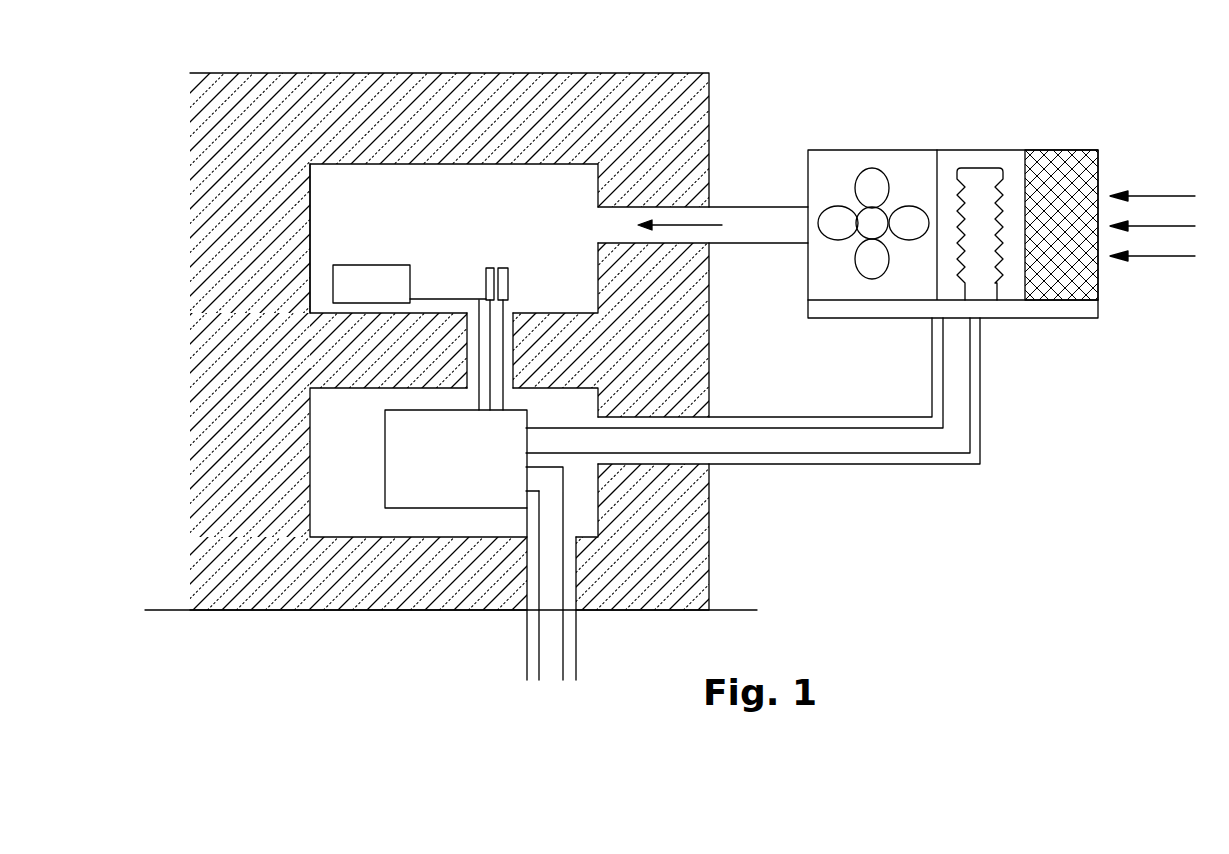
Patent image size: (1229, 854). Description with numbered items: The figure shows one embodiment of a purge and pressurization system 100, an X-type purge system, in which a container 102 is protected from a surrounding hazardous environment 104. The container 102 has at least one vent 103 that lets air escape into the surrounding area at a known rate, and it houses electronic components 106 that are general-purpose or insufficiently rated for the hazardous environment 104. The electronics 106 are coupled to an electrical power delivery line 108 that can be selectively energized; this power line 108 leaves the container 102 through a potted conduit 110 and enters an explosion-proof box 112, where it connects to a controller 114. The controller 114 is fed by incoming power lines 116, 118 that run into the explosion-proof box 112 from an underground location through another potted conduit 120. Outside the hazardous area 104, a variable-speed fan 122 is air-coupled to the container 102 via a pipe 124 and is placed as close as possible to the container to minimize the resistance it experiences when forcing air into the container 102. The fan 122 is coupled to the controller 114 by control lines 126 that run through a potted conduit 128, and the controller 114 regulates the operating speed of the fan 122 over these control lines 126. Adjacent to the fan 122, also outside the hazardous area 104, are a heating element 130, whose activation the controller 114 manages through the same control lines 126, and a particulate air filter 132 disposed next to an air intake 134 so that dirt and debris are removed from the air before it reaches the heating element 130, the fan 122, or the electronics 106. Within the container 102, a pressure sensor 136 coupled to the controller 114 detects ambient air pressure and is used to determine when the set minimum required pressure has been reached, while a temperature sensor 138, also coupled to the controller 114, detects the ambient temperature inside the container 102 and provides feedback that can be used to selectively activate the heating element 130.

The purge and pressurization system 100 is at (684, 70).
The container 102 is at (511, 164).
The vent 103 is at (310, 205).
The hazardous environment 104 is at (264, 121).
The electronic components 106 is at (392, 296).
The electrical power delivery line 108 is at (443, 299).
The potted conduit 110 is at (467, 348).
The explosion-proof box 112 is at (357, 527).
The controller 114 is at (435, 501).
The incoming power line 116 is at (535, 684).
The incoming power line 118 is at (565, 683).
The potted conduit 120 is at (577, 637).
The variable-speed fan 122 is at (875, 183).
The pipe 124 is at (725, 218).
The control lines 126 is at (808, 432).
The potted conduit 128 is at (897, 466).
The heating element 130 is at (980, 180).
The particulate air filter 132 is at (1075, 158).
The air intake 134 is at (1168, 257).
The pressure sensor 136 is at (487, 268).
The temperature sensor 138 is at (509, 267).